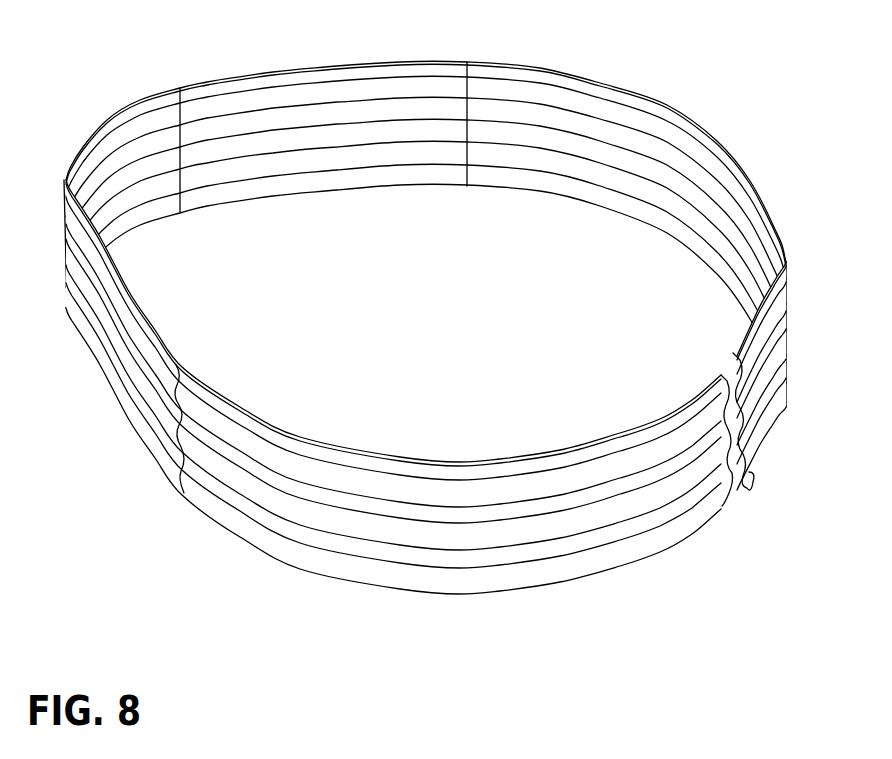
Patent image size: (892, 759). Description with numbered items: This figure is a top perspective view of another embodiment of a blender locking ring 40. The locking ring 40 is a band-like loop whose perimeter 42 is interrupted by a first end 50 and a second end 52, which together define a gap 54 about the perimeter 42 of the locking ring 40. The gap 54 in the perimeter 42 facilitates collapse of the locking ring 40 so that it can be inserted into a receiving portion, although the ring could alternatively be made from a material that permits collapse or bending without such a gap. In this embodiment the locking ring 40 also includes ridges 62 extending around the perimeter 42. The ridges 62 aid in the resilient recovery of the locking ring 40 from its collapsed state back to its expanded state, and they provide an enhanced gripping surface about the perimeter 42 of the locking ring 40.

The locking ring 40 is at (651, 78).
The perimeter 42 is at (553, 560).
The first end 50 is at (743, 452).
The second end 52 is at (716, 480).
The gap 54 is at (740, 486).
The ridges 62 is at (423, 492).